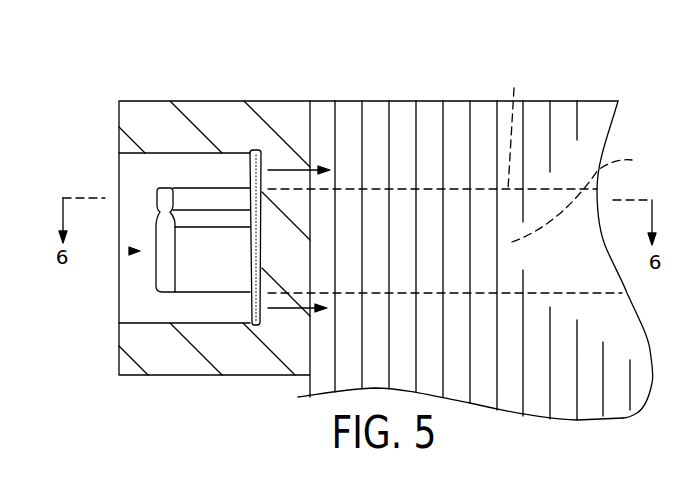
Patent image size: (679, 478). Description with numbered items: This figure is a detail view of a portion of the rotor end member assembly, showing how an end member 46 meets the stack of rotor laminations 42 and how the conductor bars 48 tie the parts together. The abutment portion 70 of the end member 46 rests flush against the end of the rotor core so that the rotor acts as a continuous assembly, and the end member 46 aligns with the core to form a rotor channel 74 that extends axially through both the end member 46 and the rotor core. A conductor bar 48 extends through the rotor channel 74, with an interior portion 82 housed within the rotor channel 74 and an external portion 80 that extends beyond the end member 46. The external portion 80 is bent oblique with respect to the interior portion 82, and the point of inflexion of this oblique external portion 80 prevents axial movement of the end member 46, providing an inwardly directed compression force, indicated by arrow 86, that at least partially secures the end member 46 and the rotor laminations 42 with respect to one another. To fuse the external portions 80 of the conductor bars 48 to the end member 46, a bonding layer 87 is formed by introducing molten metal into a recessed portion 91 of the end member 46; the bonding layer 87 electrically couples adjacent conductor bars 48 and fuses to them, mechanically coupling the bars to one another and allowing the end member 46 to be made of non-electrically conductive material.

The rotor laminations 42 is at (454, 110).
The end member 46 is at (220, 112).
The conductor bar 48 is at (158, 262).
The abutment portion 70 is at (13, 371).
The rotor channel 74 is at (514, 126).
The external portion 80 is at (200, 275).
The interior portion 82 is at (587, 196).
The compression force arrow 86 is at (288, 170).
The bonding layer 87 is at (250, 202).
The recessed portion 91 is at (130, 251).